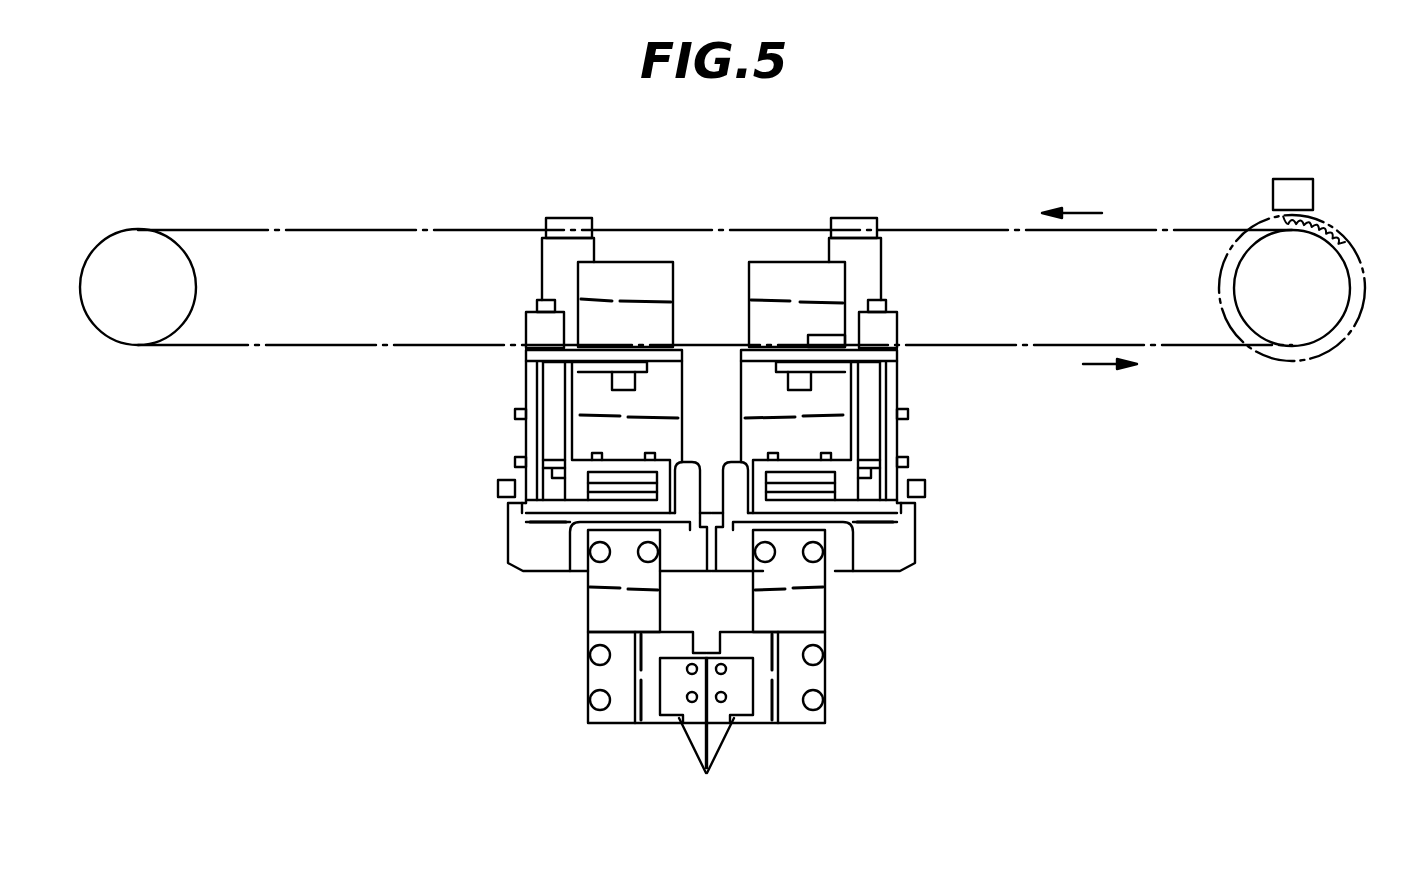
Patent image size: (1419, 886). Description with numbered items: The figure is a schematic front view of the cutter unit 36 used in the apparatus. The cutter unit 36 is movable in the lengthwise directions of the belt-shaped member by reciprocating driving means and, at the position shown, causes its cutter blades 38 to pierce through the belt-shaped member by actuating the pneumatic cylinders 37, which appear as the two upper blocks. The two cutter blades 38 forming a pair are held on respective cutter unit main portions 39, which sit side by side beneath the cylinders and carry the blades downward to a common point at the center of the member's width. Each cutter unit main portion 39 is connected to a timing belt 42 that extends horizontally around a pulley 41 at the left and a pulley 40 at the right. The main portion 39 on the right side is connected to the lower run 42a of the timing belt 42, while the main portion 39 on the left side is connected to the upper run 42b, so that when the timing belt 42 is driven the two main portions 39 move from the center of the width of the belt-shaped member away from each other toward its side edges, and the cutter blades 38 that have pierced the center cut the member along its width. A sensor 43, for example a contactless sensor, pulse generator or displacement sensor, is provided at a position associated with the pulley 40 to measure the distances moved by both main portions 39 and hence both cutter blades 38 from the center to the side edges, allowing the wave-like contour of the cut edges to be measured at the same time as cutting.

The cutter unit 36 is at (718, 204).
The pneumatic cylinder 37 is at (617, 276).
The cutter blade 38 is at (688, 742).
The cutter unit main portion 39 is at (512, 432).
The pulley 40 is at (1315, 325).
The pulley 41 is at (148, 332).
The timing belt 42 is at (1180, 347).
The lower run of the timing belt 42a is at (1045, 348).
The upper run of the timing belt 42b is at (933, 231).
The sensor 43 is at (1313, 188).